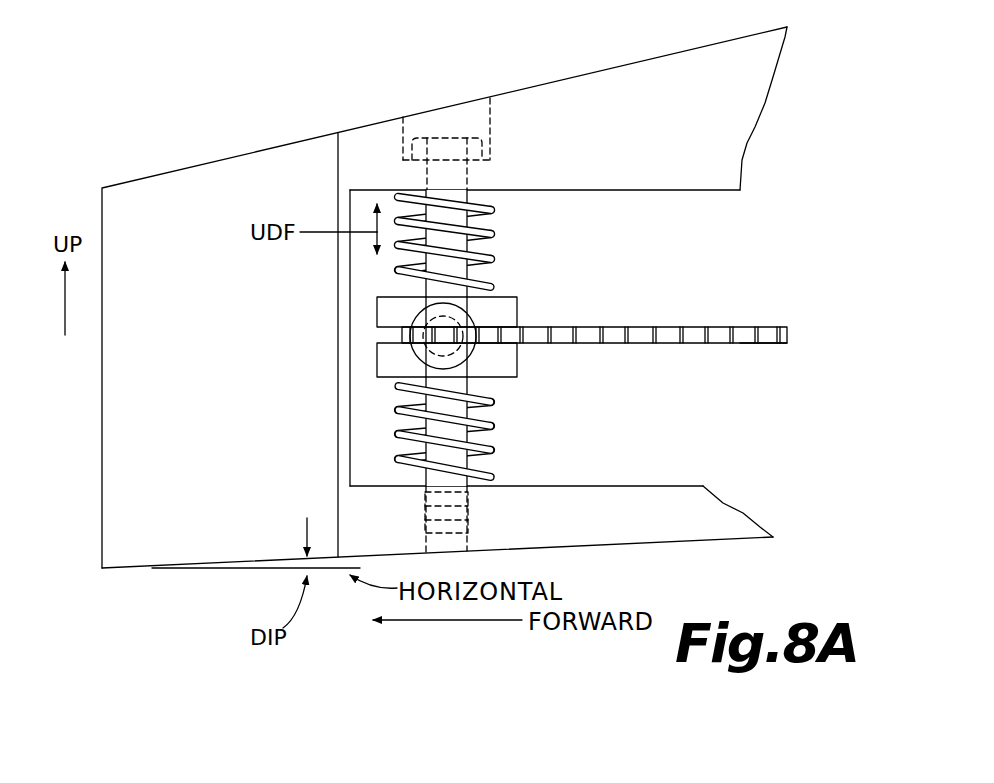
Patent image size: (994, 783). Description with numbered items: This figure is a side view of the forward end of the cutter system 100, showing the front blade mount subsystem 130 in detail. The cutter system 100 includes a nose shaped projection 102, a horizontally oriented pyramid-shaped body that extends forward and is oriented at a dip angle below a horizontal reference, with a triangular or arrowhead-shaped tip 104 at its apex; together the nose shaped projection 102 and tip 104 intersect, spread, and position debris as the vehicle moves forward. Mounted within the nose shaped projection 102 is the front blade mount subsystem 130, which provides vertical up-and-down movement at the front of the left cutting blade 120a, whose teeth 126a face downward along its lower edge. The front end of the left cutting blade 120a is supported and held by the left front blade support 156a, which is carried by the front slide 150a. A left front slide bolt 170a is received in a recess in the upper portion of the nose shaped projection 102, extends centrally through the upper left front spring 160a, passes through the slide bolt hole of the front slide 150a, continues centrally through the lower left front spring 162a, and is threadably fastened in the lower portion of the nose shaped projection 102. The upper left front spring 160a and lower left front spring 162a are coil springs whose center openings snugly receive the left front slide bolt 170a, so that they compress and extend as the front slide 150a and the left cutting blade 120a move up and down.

The cutter system 100 is at (355, 97).
The nose shaped projection 102 is at (667, 152).
The tip 104 is at (233, 314).
The left cutting blade 120a is at (733, 330).
The teeth 126a is at (752, 350).
The front blade mount subsystem 130 is at (485, 82).
The front slide 150a is at (517, 302).
The left front blade support 156a is at (413, 352).
The upper left front spring 160a is at (490, 210).
The lower left front spring 162a is at (487, 430).
The left front slide bolt 170a is at (442, 140).